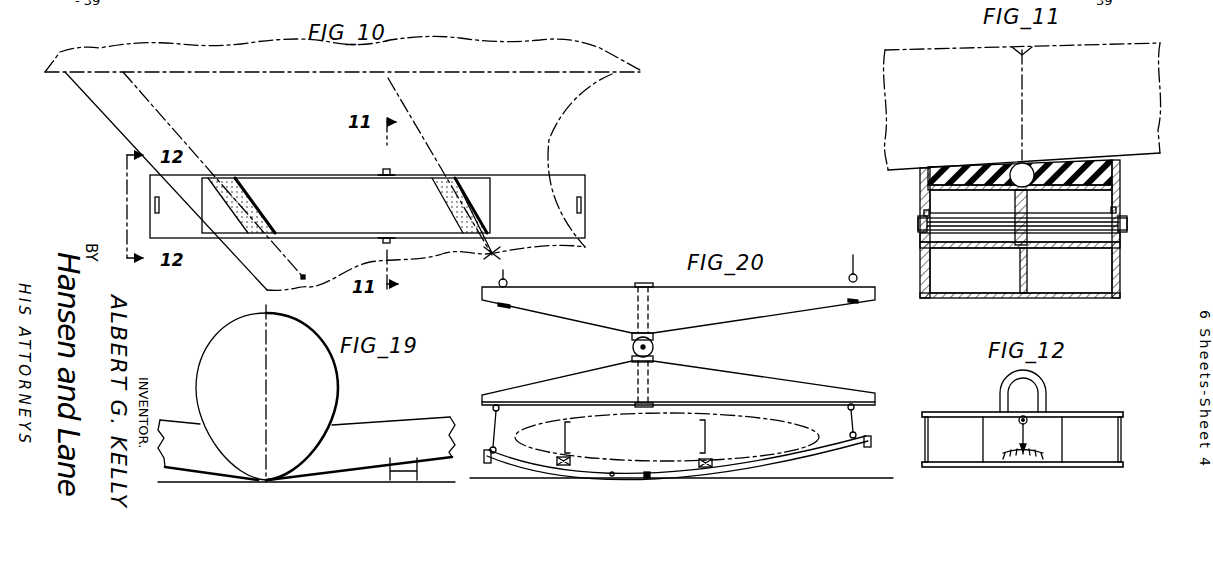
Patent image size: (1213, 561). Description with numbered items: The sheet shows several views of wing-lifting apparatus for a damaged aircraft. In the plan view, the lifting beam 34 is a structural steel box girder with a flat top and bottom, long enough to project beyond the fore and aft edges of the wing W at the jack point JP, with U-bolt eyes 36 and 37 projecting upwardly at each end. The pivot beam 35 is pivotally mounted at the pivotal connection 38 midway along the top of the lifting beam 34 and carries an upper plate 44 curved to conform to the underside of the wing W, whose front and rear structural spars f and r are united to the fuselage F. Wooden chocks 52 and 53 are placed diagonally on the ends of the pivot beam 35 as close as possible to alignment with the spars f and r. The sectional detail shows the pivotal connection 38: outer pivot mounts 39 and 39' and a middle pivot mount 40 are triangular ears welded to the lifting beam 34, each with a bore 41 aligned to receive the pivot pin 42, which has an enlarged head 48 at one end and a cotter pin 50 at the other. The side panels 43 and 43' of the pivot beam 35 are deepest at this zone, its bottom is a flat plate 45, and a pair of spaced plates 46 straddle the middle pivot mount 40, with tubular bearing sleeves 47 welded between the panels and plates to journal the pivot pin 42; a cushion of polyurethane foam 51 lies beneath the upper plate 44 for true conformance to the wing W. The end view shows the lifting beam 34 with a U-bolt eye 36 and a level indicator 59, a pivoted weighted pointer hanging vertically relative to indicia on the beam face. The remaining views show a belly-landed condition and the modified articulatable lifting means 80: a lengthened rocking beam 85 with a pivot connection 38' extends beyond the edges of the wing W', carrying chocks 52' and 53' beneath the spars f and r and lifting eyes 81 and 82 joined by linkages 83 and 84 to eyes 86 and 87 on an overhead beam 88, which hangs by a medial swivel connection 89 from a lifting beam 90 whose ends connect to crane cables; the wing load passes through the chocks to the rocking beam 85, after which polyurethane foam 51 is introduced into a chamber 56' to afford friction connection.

In FIG. 10, the fuselage F is at (100, 50).
In FIG. 19, the fuselage F is at (282, 403).
In FIG. 10, the wing W is at (441, 182).
In FIG. 11, the wing W is at (999, 106).
In FIG. 19, the wing W' is at (306, 438).
In FIG. 20, the wing W' is at (667, 437).
In FIG. 10, the front structural spar f is at (305, 277).
In FIG. 20, the front structural spar f is at (563, 443).
In FIG. 10, the rear structural spar r is at (486, 222).
In FIG. 20, the rear structural spar r is at (706, 440).
In FIG. 11, the jack point JP is at (1029, 127).
In FIG. 10, the lifting beam 34 is at (202, 234).
In FIG. 11, the lifting beam 34 is at (1120, 272).
In FIG. 12, the lifting beam 34 is at (1112, 437).
In FIG. 10, the pivot beam 35 is at (249, 234).
In FIG. 10, the U-bolt eye 36 is at (153, 203).
In FIG. 12, the U-bolt eye 36 is at (1010, 393).
In FIG. 10, the U-bolt eye 37 is at (582, 203).
In FIG. 10, the pivotal connection 38 is at (401, 156).
In FIG. 11, the pivotal connection 38 is at (1042, 225).
In FIG. 20, the pivot connection 38' is at (656, 489).
In FIG. 10, the outer pivot mount 39 is at (370, 252).
In FIG. 11, the outer pivot mount 39 is at (902, 208).
In FIG. 10, the outer pivot mount 39' is at (367, 157).
In FIG. 11, the outer pivot mount 39' is at (1136, 202).
In FIG. 11, the middle pivot mount 40 is at (1030, 212).
In FIG. 11, the bore 41 is at (1021, 205).
In FIG. 11, the pivot pin 42 is at (918, 228).
In FIG. 11, the side panel 43 is at (902, 187).
In FIG. 11, the side panel 43' is at (1143, 184).
In FIG. 10, the upper plate 44 is at (357, 209).
In FIG. 11, the upper plate 44 is at (1005, 167).
In FIG. 11, the flat plate 45 is at (973, 238).
In FIG. 11, the spaced plates 46 is at (1022, 175).
In FIG. 11, the tubular bearing sleeve 47 is at (968, 218).
In FIG. 10, the enlarged head 48 is at (390, 243).
In FIG. 11, the enlarged head 48 is at (920, 233).
In FIG. 11, the cotter pin 50 is at (1127, 238).
In FIG. 11, the polyurethane foam 51 is at (1092, 165).
In FIG. 10, the wooden chock 52 is at (241, 190).
In FIG. 19, the wooden chock 52' is at (398, 446).
In FIG. 20, the wooden chock 52' is at (536, 481).
In FIG. 10, the wooden chock 53 is at (459, 186).
In FIG. 20, the wooden chock 53' is at (725, 482).
In FIG. 20, the chamber 56' is at (681, 458).
In FIG. 12, the level indicator 59 is at (1012, 462).
In FIG. 20, the articulatable lifting means 80 is at (561, 373).
In FIG. 20, the lifting eye 81 is at (491, 449).
In FIG. 20, the lifting eye 82 is at (858, 437).
In FIG. 20, the linkage 83 is at (495, 428).
In FIG. 20, the linkage 84 is at (856, 422).
In FIG. 19, the rocking beam 85 is at (405, 475).
In FIG. 20, the rocking beam 85 is at (612, 478).
In FIG. 20, the eye 86 is at (495, 406).
In FIG. 20, the eye 87 is at (858, 405).
In FIG. 20, the overhead beam 88 is at (705, 395).
In FIG. 20, the medial swivel connection 89 is at (658, 347).
In FIG. 20, the lifting beam 90 is at (700, 308).